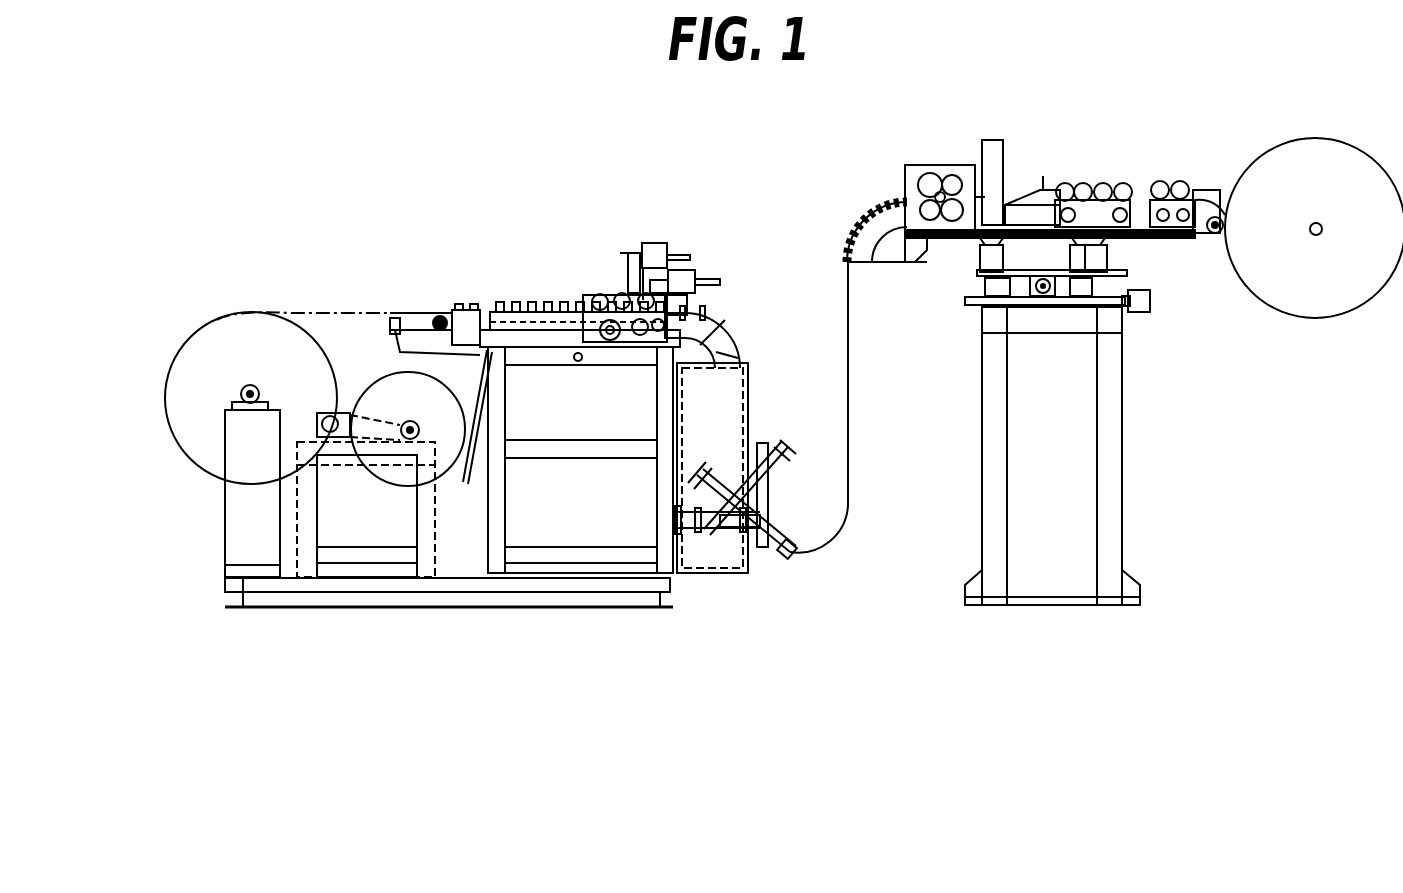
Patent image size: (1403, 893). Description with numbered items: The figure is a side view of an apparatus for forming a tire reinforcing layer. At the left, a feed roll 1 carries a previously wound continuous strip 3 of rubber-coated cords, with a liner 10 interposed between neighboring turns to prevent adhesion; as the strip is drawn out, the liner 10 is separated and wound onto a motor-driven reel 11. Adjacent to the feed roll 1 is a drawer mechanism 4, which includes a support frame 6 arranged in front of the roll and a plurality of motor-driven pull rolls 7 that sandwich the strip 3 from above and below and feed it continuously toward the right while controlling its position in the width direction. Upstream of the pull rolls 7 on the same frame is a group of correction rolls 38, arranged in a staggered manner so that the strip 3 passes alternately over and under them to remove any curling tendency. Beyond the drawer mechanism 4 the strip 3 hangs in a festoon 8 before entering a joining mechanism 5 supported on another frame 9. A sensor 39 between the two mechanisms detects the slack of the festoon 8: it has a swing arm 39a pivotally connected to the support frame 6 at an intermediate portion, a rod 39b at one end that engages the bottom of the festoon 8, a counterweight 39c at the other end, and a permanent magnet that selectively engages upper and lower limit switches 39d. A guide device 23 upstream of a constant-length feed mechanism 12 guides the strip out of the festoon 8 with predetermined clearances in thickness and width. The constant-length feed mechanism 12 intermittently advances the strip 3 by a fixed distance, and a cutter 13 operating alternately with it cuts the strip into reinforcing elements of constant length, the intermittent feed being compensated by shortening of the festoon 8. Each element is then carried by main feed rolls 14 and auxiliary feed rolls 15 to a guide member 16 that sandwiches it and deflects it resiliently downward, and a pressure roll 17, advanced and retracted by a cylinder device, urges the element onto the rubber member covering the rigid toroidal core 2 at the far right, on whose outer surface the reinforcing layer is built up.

The feed roll 1 is at (210, 317).
The rigid core 2 is at (1355, 143).
The continuous strip 3 is at (347, 312).
The drawer mechanism 4 is at (569, 344).
The joining mechanism 5 is at (1047, 188).
The support frame 6 is at (660, 408).
The pull rolls 7 is at (605, 285).
The festoon 8 is at (849, 413).
The frame 9 is at (990, 375).
The liner 10 is at (490, 400).
The reel 11 is at (440, 445).
The constant-length feed mechanism 12 is at (930, 152).
The cutter 13 is at (1017, 170).
The main feed rolls 14 is at (1095, 170).
The auxiliary feed rolls 15 is at (1180, 170).
The guide member 16 is at (1225, 195).
The pressure roll 17 is at (1227, 243).
The guide device 23 is at (858, 177).
The correction rolls 38 is at (522, 288).
The sensor 39 is at (769, 471).
The swing arm 39a is at (758, 523).
The rod 39b is at (790, 552).
The counterweight 39c is at (697, 475).
The upper and lower limit switches 39d is at (788, 447).